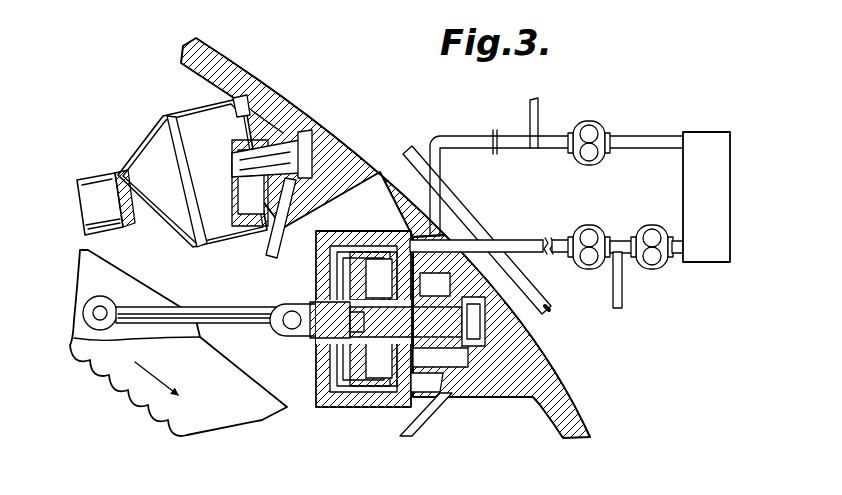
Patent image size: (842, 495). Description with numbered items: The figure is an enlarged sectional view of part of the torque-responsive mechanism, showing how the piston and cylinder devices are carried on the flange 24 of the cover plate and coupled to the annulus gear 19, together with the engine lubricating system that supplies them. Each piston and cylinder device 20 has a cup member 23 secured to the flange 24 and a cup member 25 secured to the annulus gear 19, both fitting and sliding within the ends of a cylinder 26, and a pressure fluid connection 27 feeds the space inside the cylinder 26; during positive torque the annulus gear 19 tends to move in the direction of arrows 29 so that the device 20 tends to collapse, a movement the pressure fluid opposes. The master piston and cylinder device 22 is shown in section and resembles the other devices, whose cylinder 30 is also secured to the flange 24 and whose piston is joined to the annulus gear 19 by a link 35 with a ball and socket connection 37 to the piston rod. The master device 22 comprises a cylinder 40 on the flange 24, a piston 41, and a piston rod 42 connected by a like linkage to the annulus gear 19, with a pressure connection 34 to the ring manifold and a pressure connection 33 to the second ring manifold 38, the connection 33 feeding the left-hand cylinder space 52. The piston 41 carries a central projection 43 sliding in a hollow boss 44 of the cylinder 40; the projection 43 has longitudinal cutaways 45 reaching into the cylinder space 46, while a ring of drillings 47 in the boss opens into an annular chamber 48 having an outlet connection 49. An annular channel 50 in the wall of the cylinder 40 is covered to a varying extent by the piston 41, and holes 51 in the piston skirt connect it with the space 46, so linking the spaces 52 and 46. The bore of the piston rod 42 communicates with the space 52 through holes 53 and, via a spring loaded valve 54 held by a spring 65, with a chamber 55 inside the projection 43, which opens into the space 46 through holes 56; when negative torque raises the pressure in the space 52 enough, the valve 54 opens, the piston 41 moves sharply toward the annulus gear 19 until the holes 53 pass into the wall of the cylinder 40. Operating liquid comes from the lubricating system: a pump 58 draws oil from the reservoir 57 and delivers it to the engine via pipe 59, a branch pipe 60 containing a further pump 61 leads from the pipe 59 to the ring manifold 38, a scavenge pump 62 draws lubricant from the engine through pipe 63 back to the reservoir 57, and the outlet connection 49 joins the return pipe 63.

The annulus gear 19 is at (178, 358).
The piston and cylinder device 20 is at (203, 148).
The master piston and cylinder device 22 is at (340, 279).
The cup member 23 is at (275, 99).
The flange 24 is at (228, 74).
The cup member 25 is at (138, 152).
The cylinder 26 is at (203, 110).
The pressure fluid connection 27 is at (313, 185).
The arrows 29 is at (130, 398).
The cylinder 30 is at (104, 310).
The pressure connection 33 is at (445, 240).
The pressure connection 34 is at (458, 396).
The link 35 is at (183, 287).
The ball and socket connection 37 is at (270, 303).
The second ring manifold 38 is at (448, 194).
The cylinder 40 is at (320, 407).
The piston 41 is at (426, 363).
The piston rod 42 is at (276, 304).
The central projection 43 is at (473, 322).
The hollow boss 44 is at (480, 343).
The longitudinal cutaways 45 is at (450, 288).
The cylinder space 46 is at (386, 374).
The ring of drillings 47 is at (430, 352).
The annular chamber 48 is at (480, 244).
The outlet connection 49 is at (456, 135).
The annular channel 50 is at (343, 262).
The holes 51 is at (375, 258).
The cylinder space 52 is at (340, 268).
The holes 53 is at (312, 334).
The spring loaded valve 54 is at (373, 276).
The chamber 55 is at (348, 333).
The holes 56 is at (352, 341).
The reservoir 57 is at (702, 142).
The pump 58 is at (653, 228).
The pipe 59 is at (623, 287).
The branch pipe 60 is at (608, 243).
The pump 61 is at (584, 228).
The scavenge pump 62 is at (592, 124).
The pipe 63 is at (529, 106).
The spring 65 is at (373, 362).